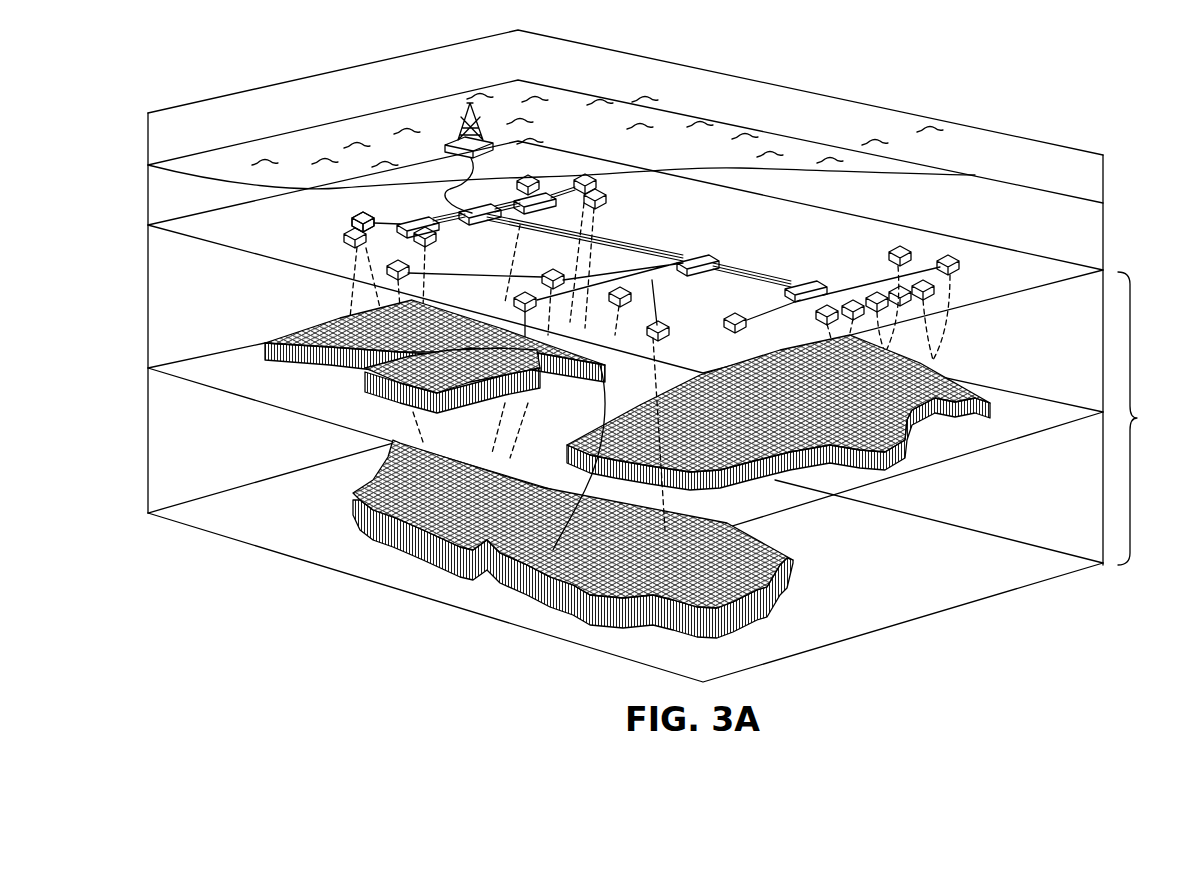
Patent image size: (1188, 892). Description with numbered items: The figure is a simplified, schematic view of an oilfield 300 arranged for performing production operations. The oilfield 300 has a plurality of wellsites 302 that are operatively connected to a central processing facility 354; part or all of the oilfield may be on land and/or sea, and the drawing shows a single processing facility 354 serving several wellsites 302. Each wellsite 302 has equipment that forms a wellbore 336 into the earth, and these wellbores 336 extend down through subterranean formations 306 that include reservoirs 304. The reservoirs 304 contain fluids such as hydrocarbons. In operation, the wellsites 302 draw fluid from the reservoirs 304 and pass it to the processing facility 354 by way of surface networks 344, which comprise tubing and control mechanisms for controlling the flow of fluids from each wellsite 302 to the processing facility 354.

The oilfield 300 is at (203, 80).
The wellsites 302 is at (752, 298).
The reservoirs 304 is at (897, 474).
The subterranean formations 306 is at (1146, 418).
The wellbore 336 is at (960, 326).
The surface networks 344 is at (388, 240).
The central processing facility 354 is at (453, 121).